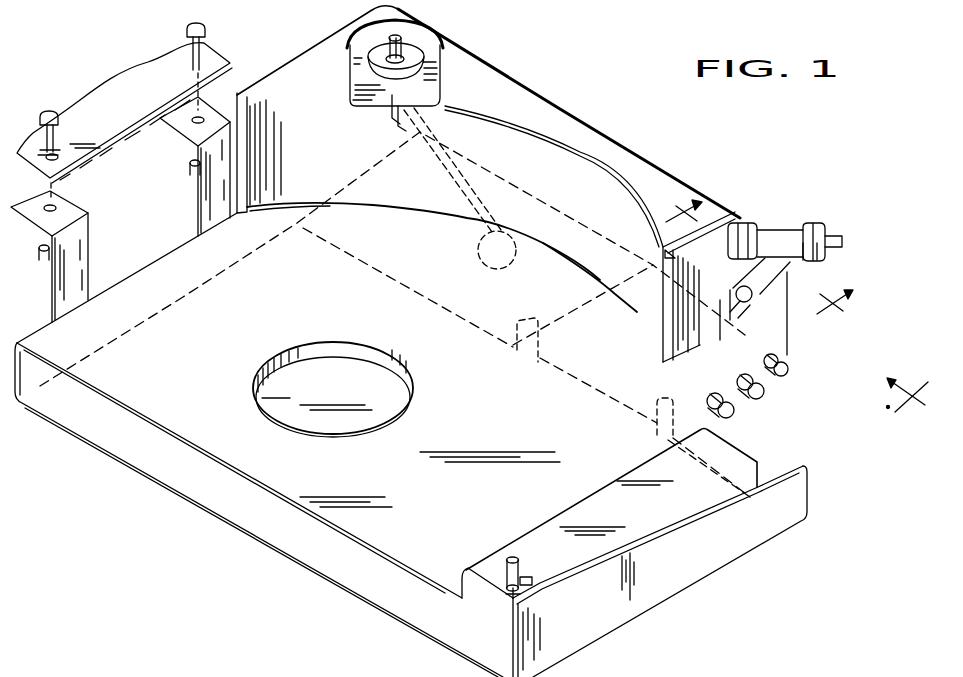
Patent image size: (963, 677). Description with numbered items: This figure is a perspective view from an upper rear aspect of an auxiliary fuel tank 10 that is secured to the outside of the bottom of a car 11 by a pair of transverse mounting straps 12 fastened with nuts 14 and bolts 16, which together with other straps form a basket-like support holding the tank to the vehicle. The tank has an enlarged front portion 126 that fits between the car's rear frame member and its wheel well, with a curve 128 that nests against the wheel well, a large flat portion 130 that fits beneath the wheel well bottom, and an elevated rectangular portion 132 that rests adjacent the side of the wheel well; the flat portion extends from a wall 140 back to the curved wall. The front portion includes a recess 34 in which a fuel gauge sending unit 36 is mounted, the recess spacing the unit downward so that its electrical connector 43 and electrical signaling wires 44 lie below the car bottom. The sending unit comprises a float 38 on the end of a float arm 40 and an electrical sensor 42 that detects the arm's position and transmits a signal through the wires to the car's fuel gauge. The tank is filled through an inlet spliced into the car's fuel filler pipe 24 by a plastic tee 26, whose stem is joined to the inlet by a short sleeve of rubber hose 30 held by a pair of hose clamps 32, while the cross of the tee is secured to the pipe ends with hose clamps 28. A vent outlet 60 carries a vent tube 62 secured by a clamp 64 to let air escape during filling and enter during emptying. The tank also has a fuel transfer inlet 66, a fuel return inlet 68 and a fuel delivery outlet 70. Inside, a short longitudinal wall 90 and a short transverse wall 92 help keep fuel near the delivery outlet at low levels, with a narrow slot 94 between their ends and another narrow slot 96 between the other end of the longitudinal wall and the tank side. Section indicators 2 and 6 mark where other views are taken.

The section line 2 is at (908, 385).
The section line 6 is at (757, 254).
The auxiliary fuel tank 10 is at (552, 86).
The car 11 is at (116, 46).
The transverse mounting straps 12 is at (218, 210).
The nuts 14 is at (190, 164).
The bolts 16 is at (193, 26).
The fuel filler pipe 24 is at (833, 241).
The plastic tee 26 is at (792, 268).
The hose clamps 28 is at (822, 258).
The rubber hose 30 is at (776, 230).
The hose clamps 32 is at (748, 224).
The recess 34 is at (430, 50).
The fuel gauge sending unit 36 is at (370, 120).
The float 38 is at (493, 270).
The float arm 40 is at (462, 187).
The electrical sensor 42 is at (414, 97).
The electrical connector 43 is at (386, 58).
The electrical signaling wires 44 is at (390, 45).
The vent outlet 60 is at (518, 598).
The vent tube 62 is at (502, 560).
The clamp 64 is at (527, 577).
The fuel transfer inlet 66 is at (765, 386).
The fuel return inlet 68 is at (790, 368).
The fuel delivery outlet 70 is at (736, 408).
The longitudinal wall 90 is at (597, 310).
The transverse wall 92 is at (593, 384).
The slot 94 is at (527, 353).
The slot 96 is at (642, 236).
The enlarged front portion 126 is at (728, 281).
The curve 128 is at (567, 167).
The large flat portion 130 is at (315, 308).
The elevated rectangular portion 132 is at (573, 517).
The wall 140 is at (278, 533).